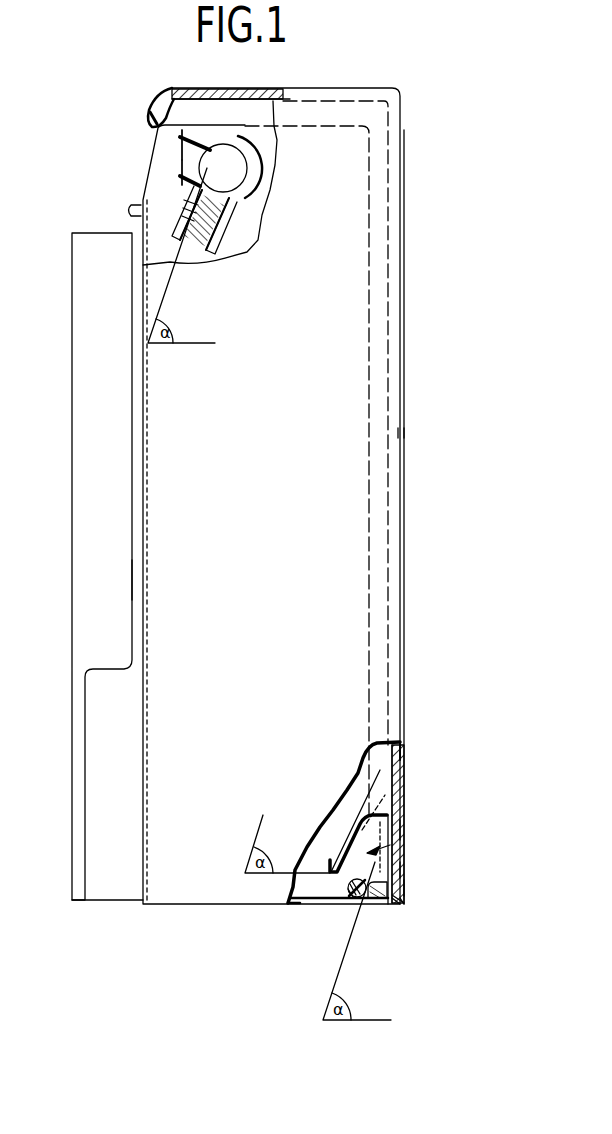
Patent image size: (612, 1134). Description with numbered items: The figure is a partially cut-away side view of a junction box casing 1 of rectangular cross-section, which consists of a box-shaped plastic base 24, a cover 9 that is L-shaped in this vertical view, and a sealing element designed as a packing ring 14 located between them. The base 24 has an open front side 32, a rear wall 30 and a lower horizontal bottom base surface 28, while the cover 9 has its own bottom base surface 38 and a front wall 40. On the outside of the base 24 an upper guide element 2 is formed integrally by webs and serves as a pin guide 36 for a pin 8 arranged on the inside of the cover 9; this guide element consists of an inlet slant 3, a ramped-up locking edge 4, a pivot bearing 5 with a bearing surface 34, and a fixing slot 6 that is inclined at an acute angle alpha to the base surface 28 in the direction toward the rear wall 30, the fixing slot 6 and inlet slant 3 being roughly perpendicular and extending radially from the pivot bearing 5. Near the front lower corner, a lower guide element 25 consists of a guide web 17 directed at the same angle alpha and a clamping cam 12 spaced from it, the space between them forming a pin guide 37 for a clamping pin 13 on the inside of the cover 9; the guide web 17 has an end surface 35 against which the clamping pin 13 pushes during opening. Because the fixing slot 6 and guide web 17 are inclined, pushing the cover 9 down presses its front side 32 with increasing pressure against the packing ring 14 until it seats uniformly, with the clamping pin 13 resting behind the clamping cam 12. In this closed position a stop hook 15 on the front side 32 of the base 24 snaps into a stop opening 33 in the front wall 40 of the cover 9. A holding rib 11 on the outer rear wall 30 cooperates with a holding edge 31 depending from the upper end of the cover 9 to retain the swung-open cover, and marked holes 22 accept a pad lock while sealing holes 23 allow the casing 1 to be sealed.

The junction box casing 1 is at (410, 242).
The upper guide element 2 is at (203, 138).
The inlet slant 3 is at (182, 152).
The ramped-up locking edge 4 is at (210, 167).
The pivot bearing 5 is at (238, 168).
The fixing slot 6 is at (244, 202).
The pin 8 is at (198, 263).
The cover 9 is at (240, 95).
The holding rib 11 is at (128, 211).
The clamping cam 12 is at (378, 900).
The clamping pin 13 is at (352, 898).
The packing ring 14 is at (388, 433).
The stop hook 15 is at (405, 890).
The guide web 17 is at (335, 858).
The marked holes 22 is at (405, 830).
The sealing holes 23 is at (405, 898).
The base 24 is at (72, 445).
The lower guide element 25 is at (390, 845).
The base surface 28 is at (306, 903).
The rear wall 30 is at (132, 578).
The holding edge 31 is at (146, 118).
The front side 32 is at (407, 757).
The stop opening 33 is at (408, 870).
The bearing surface 34 is at (268, 136).
The end surface 35 is at (352, 783).
The pin guide 36 is at (200, 182).
The pin guide 37 is at (340, 893).
The base surface of cover 38 is at (397, 905).
The front wall 40 is at (408, 905).